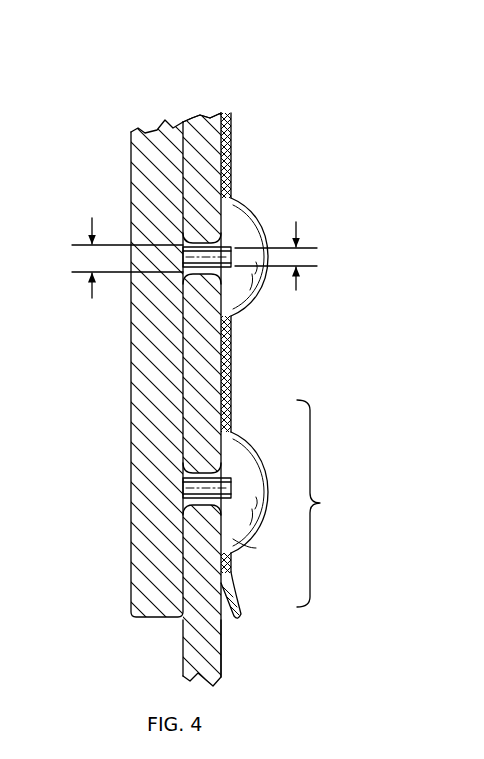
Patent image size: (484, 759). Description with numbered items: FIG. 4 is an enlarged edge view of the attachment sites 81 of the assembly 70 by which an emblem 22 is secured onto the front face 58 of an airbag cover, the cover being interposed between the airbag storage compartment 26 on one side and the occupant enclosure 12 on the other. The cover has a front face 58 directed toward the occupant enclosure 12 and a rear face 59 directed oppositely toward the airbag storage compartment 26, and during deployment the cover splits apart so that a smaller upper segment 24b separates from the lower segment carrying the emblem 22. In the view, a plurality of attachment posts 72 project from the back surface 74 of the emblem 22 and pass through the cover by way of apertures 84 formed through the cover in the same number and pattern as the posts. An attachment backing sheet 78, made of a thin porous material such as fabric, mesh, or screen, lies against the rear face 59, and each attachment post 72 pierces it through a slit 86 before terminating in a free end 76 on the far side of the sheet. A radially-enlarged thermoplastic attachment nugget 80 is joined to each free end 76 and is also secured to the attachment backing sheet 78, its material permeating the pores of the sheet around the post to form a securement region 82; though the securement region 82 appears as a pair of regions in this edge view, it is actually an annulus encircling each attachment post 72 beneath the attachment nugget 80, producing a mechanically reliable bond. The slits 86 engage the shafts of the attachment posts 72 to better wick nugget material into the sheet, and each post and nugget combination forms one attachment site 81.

The occupant enclosure 12 is at (63, 370).
The emblem 22 is at (242, 367).
The upper segment 24b is at (202, 111).
The airbag storage compartment 26 is at (319, 382).
The front face 58 is at (183, 644).
The rear face 59 is at (222, 640).
The assembly 70 is at (325, 503).
The attachment post 72 is at (232, 542).
The back surface 74 is at (191, 378).
The free end 76 is at (232, 479).
The attachment backing sheet 78 is at (226, 109).
The attachment nugget 80 is at (257, 208).
The attachment site 81 is at (176, 287).
The securement region 82 is at (231, 195).
The aperture 84 is at (127, 247).
The slit 86 is at (276, 244).